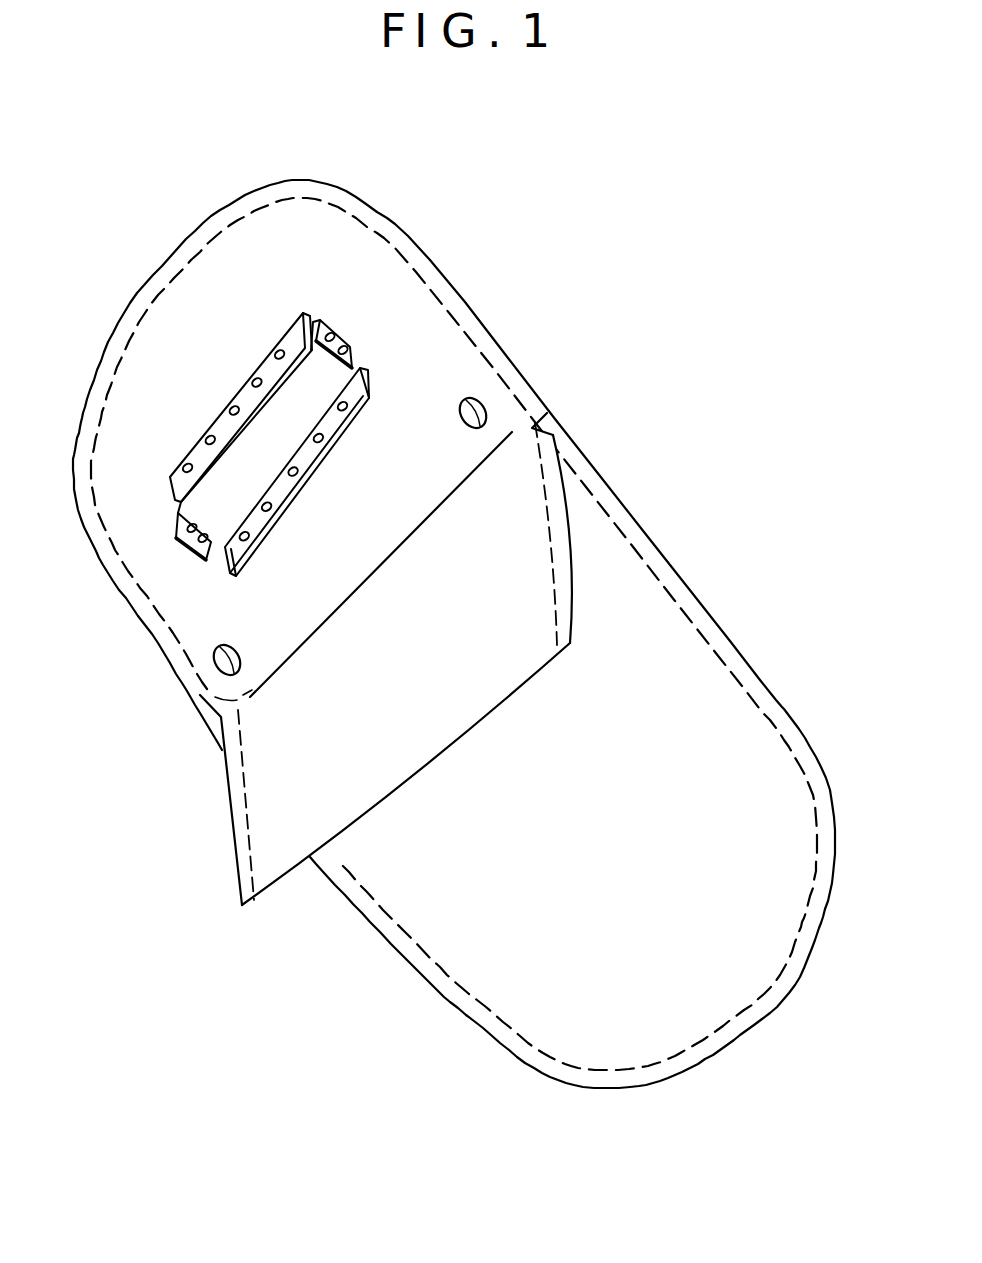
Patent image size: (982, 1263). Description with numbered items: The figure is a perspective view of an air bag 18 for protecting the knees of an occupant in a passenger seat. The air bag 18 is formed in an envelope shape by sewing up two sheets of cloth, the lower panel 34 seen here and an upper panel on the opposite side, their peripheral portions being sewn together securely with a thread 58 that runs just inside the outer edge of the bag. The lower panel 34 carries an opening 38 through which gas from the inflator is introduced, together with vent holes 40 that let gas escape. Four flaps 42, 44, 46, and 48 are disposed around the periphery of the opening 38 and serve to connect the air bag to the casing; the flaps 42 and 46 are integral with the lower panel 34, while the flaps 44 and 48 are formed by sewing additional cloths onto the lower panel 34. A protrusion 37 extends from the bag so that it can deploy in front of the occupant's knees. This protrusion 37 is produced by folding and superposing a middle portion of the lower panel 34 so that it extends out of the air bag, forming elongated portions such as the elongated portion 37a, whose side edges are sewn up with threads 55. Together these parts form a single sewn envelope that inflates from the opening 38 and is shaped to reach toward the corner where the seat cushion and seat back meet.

The air bag 18 is at (446, 634).
The lower panel 34 is at (723, 730).
The protrusion 37 is at (381, 659).
The elongated portion 37a is at (303, 780).
The opening 38 is at (346, 436).
The vent holes 40 is at (478, 407).
The flap 42 is at (243, 393).
The flap 44 is at (342, 336).
The flap 46 is at (307, 460).
The flap 48 is at (203, 560).
The threads 55 is at (556, 537).
The thread 58 is at (695, 618).